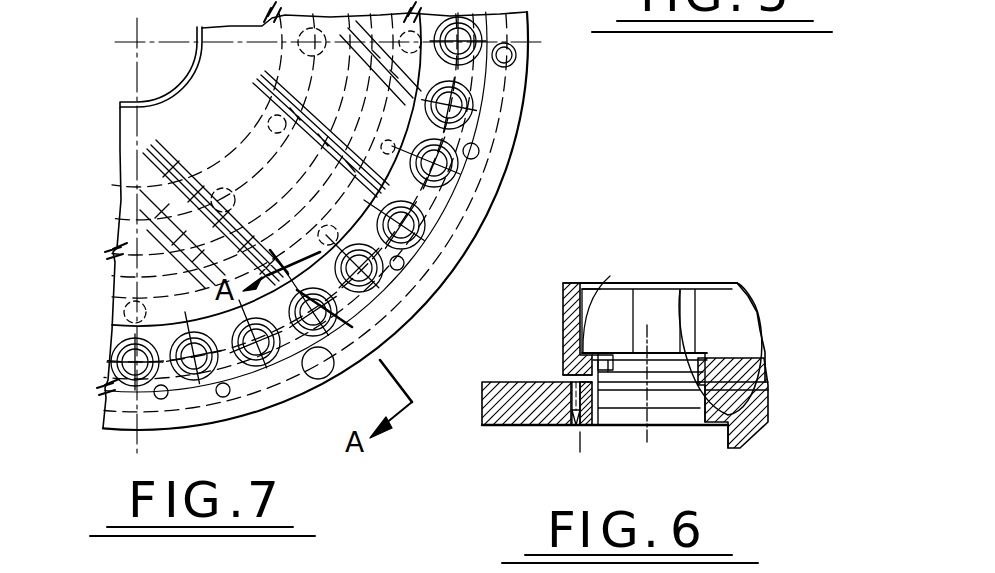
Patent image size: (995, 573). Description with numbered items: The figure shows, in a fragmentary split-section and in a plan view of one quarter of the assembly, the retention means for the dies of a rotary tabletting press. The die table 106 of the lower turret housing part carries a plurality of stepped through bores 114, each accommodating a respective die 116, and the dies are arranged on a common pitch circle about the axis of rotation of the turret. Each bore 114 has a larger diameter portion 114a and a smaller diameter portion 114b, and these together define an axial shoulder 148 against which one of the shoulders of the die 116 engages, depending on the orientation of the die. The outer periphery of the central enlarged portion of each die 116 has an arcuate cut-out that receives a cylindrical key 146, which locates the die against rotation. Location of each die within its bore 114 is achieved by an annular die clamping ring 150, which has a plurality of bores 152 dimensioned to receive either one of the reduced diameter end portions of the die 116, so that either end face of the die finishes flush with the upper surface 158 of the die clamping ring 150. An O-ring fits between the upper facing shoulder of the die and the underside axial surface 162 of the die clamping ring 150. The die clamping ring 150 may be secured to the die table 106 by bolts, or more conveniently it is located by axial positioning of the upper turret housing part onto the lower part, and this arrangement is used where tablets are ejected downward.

In FIG. 6, the die table 106 is at (497, 427).
In FIG. 6, the stepped through bore 114 is at (613, 427).
In FIG. 6, the larger diameter portion 114a is at (752, 387).
In FIG. 6, the smaller diameter portion 114b is at (680, 430).
In FIG. 7, the die 116 is at (452, 102).
In FIG. 7, the cylindrical key 146 is at (480, 148).
In FIG. 6, the cylindrical key 146 is at (540, 427).
In FIG. 6, the axial shoulder 148 is at (677, 312).
In FIG. 6, the annular die clamping ring 150 is at (600, 283).
In FIG. 6, the bore of die clamping ring 152 is at (697, 310).
In FIG. 6, the upper surface of die clamping ring 158 is at (757, 309).
In FIG. 6, the underside axial surface of die clamping ring 162 is at (598, 376).